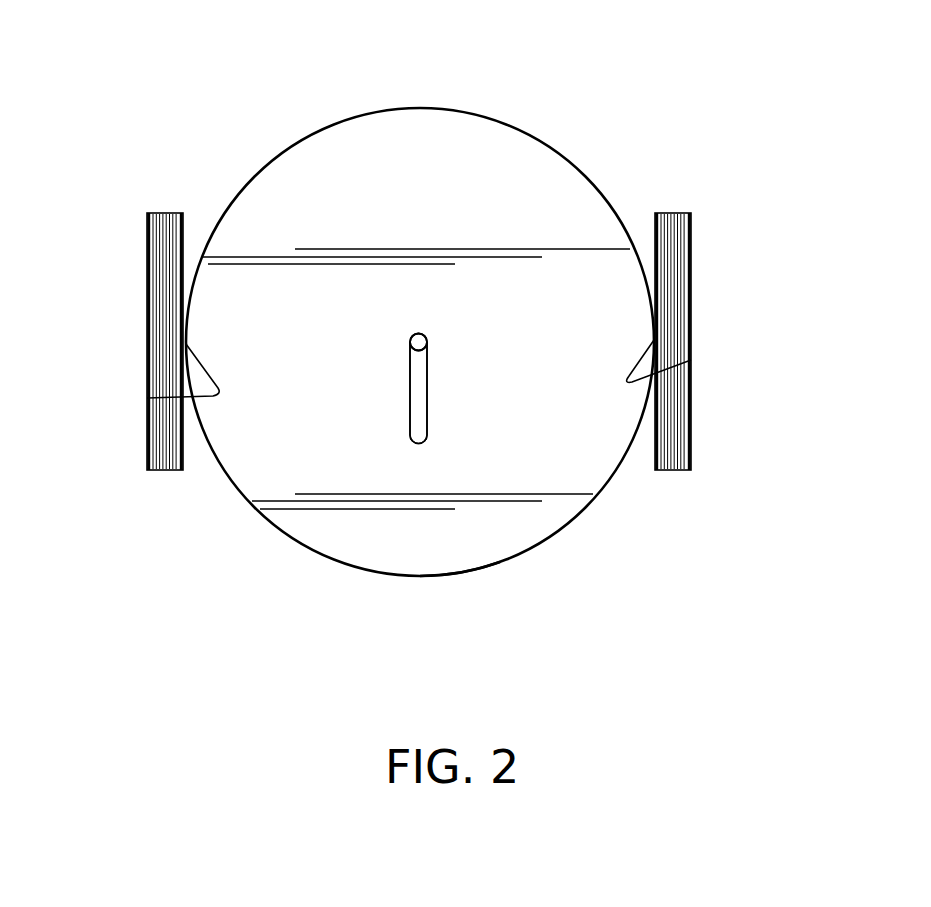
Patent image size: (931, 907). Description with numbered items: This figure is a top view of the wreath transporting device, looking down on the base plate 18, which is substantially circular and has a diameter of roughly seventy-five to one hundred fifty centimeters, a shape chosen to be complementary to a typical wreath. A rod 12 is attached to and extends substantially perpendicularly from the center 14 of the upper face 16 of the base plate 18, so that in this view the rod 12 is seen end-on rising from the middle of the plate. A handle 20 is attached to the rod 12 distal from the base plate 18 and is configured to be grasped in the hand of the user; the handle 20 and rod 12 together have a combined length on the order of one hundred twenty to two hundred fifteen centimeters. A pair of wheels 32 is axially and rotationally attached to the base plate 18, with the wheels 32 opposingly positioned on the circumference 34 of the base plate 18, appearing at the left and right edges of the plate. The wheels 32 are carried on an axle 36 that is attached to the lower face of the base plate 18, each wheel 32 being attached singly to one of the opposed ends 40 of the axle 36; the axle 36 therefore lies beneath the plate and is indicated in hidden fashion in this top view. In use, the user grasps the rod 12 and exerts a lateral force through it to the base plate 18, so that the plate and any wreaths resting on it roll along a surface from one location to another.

The rod 12 is at (429, 336).
The center 14 is at (489, 385).
The upper face 16 is at (417, 334).
The base plate 18 is at (348, 117).
The handle 20 is at (414, 422).
The wheel 32 is at (146, 323).
The circumference 34 is at (501, 562).
The axle 36 is at (299, 328).
The opposed ends 40 is at (147, 398).